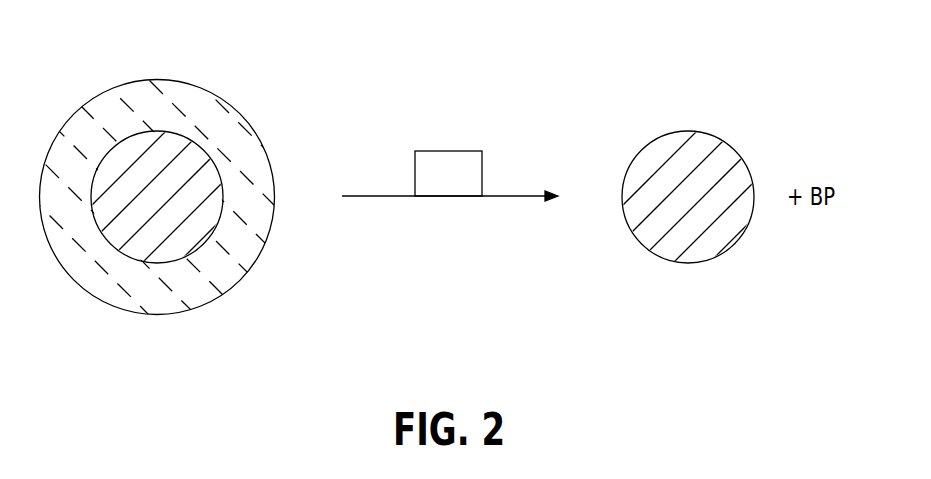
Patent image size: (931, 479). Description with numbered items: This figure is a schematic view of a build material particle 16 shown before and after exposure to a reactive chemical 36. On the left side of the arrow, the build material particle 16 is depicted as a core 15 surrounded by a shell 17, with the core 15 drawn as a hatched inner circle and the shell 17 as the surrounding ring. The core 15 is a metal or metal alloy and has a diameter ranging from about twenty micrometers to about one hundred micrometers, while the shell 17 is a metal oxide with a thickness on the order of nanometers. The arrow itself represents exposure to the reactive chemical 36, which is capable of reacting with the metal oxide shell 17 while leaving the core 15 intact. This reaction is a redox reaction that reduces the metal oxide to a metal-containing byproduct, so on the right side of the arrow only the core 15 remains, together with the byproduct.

The core 15 is at (122, 225).
The build material particle 16 is at (228, 195).
The shell 17 is at (217, 270).
The reactive chemical 36 is at (449, 151).